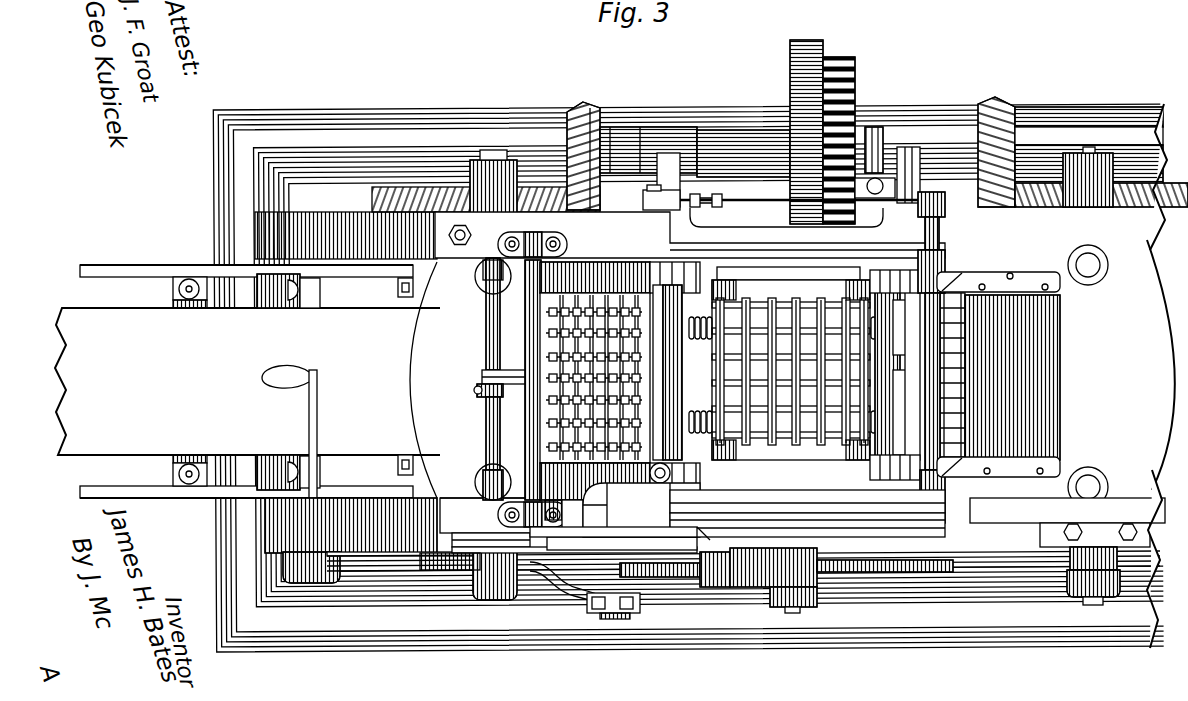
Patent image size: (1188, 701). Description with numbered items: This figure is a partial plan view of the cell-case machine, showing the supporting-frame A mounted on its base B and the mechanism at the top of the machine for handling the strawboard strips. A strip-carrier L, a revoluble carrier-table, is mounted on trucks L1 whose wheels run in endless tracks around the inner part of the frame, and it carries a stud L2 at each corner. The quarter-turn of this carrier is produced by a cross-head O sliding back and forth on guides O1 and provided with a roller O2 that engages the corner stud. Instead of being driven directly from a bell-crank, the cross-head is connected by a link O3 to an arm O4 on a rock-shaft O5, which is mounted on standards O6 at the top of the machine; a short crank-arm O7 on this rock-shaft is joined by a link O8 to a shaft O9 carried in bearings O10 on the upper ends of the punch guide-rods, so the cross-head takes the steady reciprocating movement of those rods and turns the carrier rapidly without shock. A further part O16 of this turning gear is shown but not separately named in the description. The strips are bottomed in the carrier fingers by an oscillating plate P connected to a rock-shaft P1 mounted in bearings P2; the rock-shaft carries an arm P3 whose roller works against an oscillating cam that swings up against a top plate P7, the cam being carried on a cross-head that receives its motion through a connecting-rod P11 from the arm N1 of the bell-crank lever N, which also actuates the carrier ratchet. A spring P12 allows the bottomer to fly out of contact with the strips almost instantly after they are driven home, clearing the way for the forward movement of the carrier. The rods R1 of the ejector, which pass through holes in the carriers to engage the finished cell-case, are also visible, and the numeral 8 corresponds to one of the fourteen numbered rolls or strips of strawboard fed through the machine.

The base B is at (402, 112).
The supporting-frame A is at (333, 214).
The rods R1 is at (790, 80).
The spring P12 is at (778, 200).
The standards O6 is at (560, 240).
The strip-carrier L is at (592, 300).
The trucks L1 is at (621, 372).
The stud L2 is at (736, 462).
The bearings P2 is at (907, 262).
The rock-shaft P1 is at (940, 240).
The oscillating plate P is at (1005, 374).
The arm P3 is at (960, 510).
The top plate P7 is at (1095, 554).
The connecting-rod P11 is at (814, 563).
The cross-head O is at (622, 510).
The guides O1 is at (767, 527).
The roller O2 is at (650, 480).
The link O3 is at (597, 580).
The arm O4 is at (490, 540).
The rock-shaft O5 is at (525, 447).
The short crank-arm O7 is at (522, 371).
The link O8 is at (490, 402).
The shaft O9 is at (497, 442).
The bearings O10 is at (483, 485).
The rod O16 is at (477, 283).
The bell-crank lever N is at (685, 582).
The arm N1 is at (748, 590).
The rod 8 is at (247, 381).